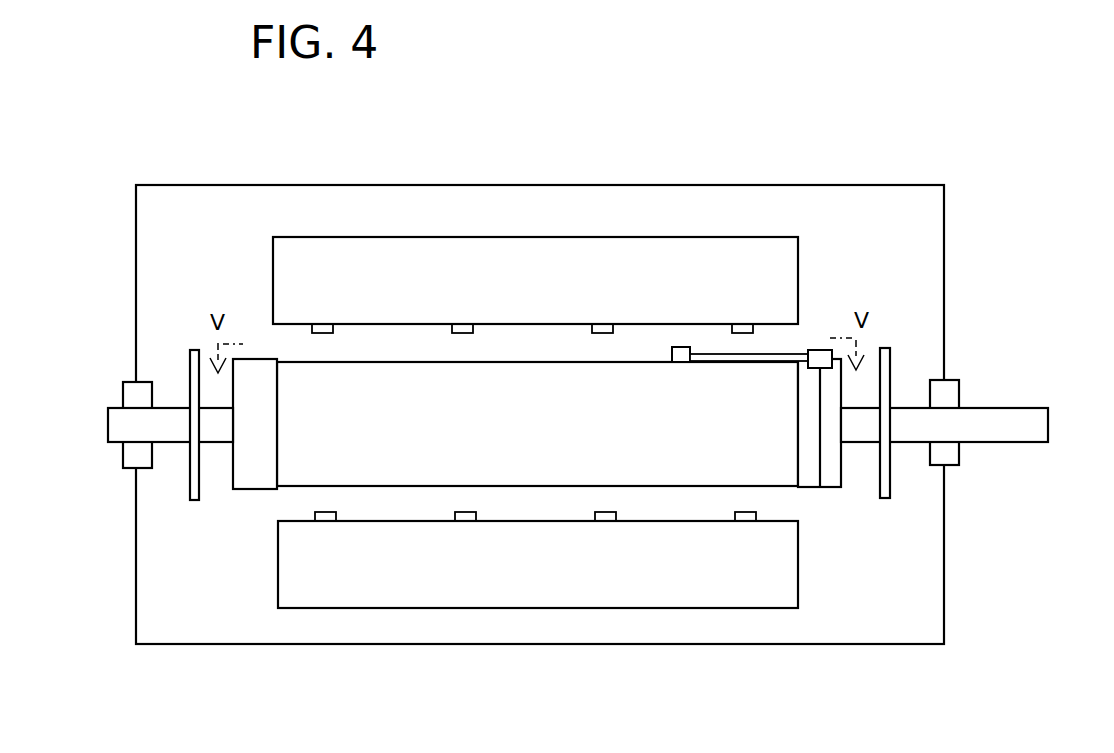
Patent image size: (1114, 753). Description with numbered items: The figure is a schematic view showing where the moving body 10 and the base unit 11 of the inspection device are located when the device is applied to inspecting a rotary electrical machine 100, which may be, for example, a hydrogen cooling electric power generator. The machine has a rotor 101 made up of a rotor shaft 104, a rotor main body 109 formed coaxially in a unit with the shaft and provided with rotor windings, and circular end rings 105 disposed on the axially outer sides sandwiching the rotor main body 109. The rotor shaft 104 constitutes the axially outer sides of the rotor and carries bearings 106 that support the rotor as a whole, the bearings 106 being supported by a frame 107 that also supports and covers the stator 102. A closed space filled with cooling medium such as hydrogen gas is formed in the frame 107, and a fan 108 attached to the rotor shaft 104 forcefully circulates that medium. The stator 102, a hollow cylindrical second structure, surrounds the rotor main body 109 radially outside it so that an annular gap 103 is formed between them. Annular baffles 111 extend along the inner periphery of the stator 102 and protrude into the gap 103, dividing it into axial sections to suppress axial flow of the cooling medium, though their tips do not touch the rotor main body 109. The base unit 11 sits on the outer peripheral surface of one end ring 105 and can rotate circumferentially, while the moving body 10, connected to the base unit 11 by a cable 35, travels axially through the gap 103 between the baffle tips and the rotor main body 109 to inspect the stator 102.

The rotary electrical machine 100 is at (896, 125).
The rotor 101 is at (1015, 379).
The stator 102 is at (792, 267).
The annular gap 103 is at (501, 599).
The rotor shaft 104 is at (992, 440).
The circular end rings 105 is at (255, 470).
The bearings 106 is at (127, 388).
The frame 107 is at (337, 185).
The fan 108 is at (190, 488).
The rotor main body 109 is at (515, 375).
The annular baffles 111 is at (595, 521).
The moving body 10 is at (680, 347).
The cable 35 is at (718, 352).
The base unit 11 is at (815, 350).